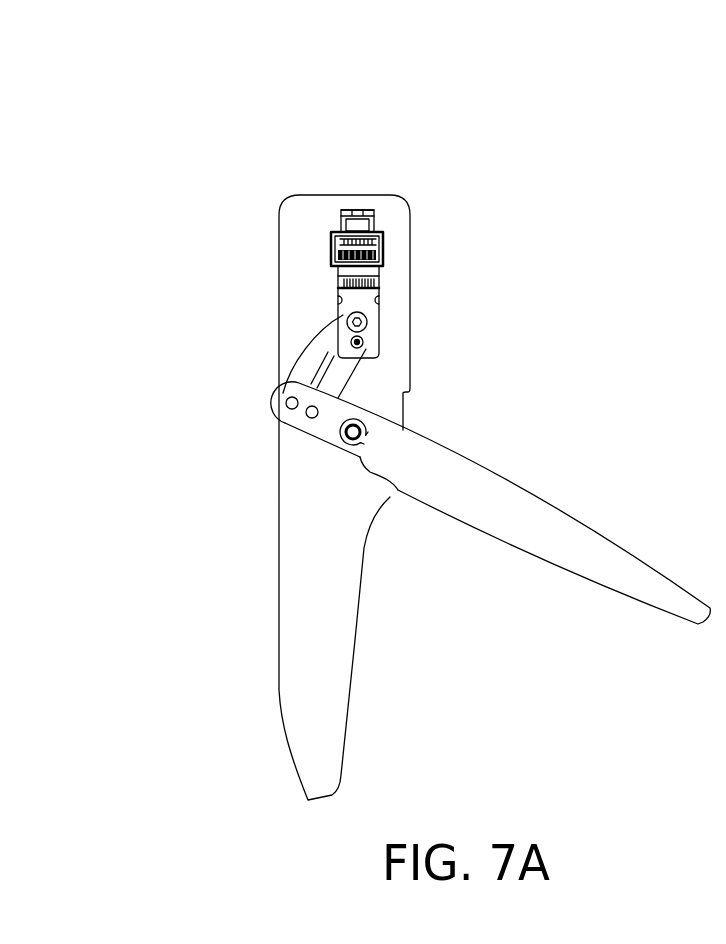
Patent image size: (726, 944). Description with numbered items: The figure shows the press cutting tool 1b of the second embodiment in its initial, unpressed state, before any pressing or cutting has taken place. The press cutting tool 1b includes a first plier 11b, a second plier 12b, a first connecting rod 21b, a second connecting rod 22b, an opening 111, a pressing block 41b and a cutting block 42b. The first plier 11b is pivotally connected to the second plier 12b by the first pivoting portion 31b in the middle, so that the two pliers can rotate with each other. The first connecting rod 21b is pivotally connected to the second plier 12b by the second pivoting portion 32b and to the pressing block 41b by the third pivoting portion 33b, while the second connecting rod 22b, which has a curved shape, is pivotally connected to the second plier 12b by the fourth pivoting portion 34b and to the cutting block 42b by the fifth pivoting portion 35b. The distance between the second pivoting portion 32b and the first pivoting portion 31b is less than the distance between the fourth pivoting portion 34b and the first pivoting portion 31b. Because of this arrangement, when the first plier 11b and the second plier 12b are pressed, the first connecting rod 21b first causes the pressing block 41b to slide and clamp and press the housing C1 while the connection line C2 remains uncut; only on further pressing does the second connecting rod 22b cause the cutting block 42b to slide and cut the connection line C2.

The press cutting tool 1b is at (248, 183).
The first plier 11b is at (310, 613).
The second plier 12b is at (521, 494).
The first pivoting portion 31b is at (388, 505).
The second pivoting portion 32b is at (309, 420).
The fourth pivoting portion 34b is at (288, 410).
The second connecting rod 22b is at (304, 362).
The first connecting rod 21b is at (342, 380).
The pressing block 41b is at (352, 360).
The cutting block 42b is at (338, 293).
The fifth pivoting portion 35b is at (364, 314).
The third pivoting portion 33b is at (363, 340).
The housing C1 is at (332, 248).
The connection line C2 is at (342, 233).
The opening 111 is at (370, 211).